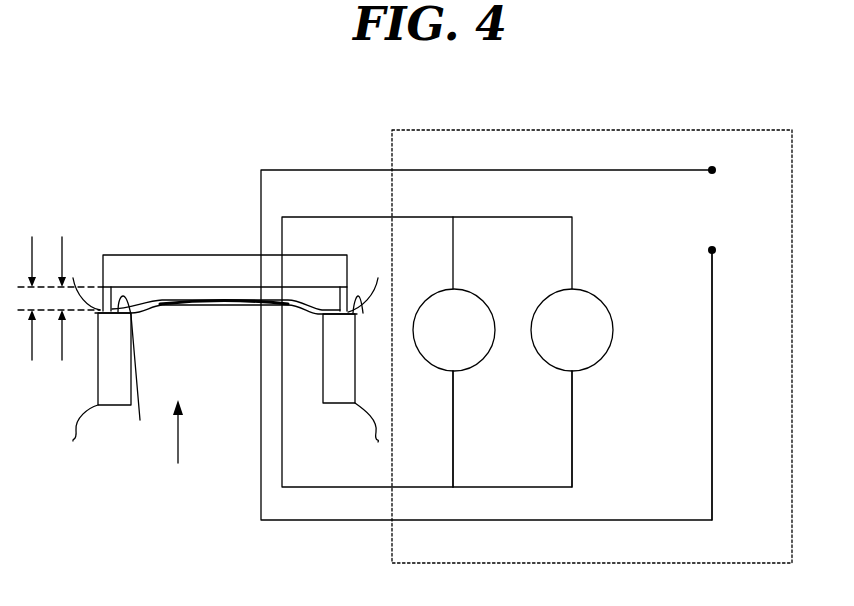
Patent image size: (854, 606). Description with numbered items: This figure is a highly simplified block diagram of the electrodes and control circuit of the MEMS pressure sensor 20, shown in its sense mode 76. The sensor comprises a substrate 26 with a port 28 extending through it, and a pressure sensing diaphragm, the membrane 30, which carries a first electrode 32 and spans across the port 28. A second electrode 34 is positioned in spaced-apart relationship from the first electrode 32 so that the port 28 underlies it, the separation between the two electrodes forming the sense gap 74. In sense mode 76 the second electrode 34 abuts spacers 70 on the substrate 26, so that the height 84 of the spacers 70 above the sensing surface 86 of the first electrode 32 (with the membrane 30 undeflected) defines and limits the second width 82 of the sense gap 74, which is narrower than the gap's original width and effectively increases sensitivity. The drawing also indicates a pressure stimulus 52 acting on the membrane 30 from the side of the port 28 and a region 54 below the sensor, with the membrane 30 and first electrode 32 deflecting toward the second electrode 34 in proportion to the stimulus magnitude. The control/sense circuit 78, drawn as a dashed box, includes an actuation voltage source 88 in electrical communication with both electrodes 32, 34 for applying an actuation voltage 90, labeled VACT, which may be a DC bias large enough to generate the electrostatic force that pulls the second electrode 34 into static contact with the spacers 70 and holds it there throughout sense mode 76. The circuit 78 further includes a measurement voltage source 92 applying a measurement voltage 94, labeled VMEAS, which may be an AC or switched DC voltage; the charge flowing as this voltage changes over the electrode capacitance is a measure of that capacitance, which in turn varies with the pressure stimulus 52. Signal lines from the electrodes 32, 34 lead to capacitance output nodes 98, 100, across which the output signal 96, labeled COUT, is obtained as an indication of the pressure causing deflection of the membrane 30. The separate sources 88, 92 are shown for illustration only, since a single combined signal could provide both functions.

The pressure sensor 20 is at (243, 120).
The substrate 26 is at (102, 378).
The port 28 is at (244, 359).
The membrane 30 is at (150, 313).
The first electrode 32 is at (178, 298).
The second electrode 34 is at (190, 258).
The pressure stimulus 52 is at (178, 447).
The reference volume 54 is at (143, 526).
The spacers 70 is at (102, 300).
The sense gap 74 is at (238, 296).
The sense mode 76 is at (145, 135).
The control/sense circuit 78 is at (423, 128).
The second width 82 is at (63, 258).
The height 84 is at (33, 258).
The sensing surface 86 is at (135, 371).
The actuation voltage source 88 is at (462, 292).
The actuation voltage 90 is at (457, 347).
The measurement voltage source 92 is at (583, 293).
The measurement voltage 94 is at (578, 348).
The output signal 96 is at (723, 195).
The capacitance output node 98 is at (710, 168).
The capacitance output node 100 is at (717, 250).